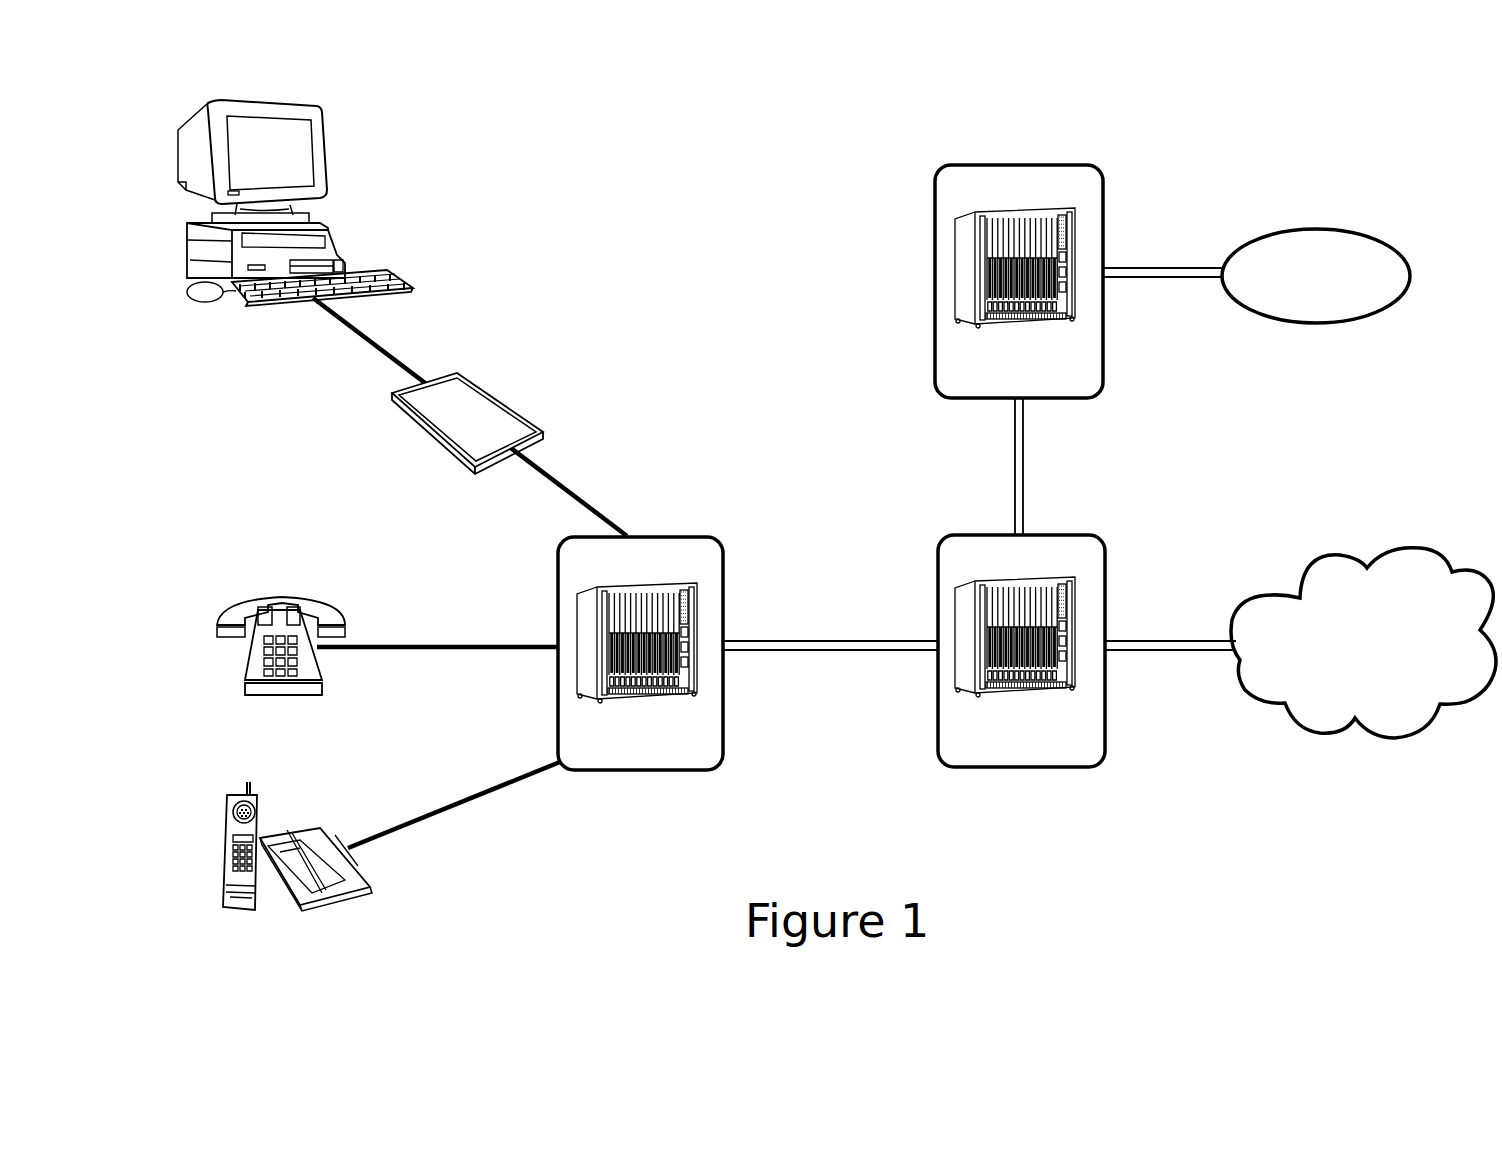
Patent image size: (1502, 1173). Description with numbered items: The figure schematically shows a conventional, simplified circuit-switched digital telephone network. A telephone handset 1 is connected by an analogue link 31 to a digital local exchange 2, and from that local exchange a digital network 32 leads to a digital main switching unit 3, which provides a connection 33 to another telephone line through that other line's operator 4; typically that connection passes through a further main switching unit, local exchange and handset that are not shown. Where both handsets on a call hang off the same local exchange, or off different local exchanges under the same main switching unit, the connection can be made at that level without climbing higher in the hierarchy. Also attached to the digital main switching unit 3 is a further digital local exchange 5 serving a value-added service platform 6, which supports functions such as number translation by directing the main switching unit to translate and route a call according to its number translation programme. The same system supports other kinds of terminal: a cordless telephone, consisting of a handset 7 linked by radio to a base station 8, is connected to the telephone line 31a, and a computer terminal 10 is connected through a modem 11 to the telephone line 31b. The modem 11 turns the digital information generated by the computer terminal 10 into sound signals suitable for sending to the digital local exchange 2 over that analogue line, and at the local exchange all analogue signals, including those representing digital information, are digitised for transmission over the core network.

The telephone handset 1 is at (283, 603).
The digital local exchange 2 is at (627, 772).
The digital main switching unit 3 is at (1105, 578).
The other line's operator 4 is at (1342, 553).
The further digital local exchange 5 is at (935, 245).
The value-added service platform 6 is at (1312, 228).
The cordless telephone handset 7 is at (228, 857).
The base station 8 is at (317, 898).
The computer terminal 10 is at (325, 178).
The modem 11 is at (465, 392).
The analogue link 31 is at (395, 649).
The telephone line 31a is at (438, 813).
The telephone line 31b is at (567, 485).
The digital network 32 is at (838, 653).
The connection 33 is at (1172, 655).